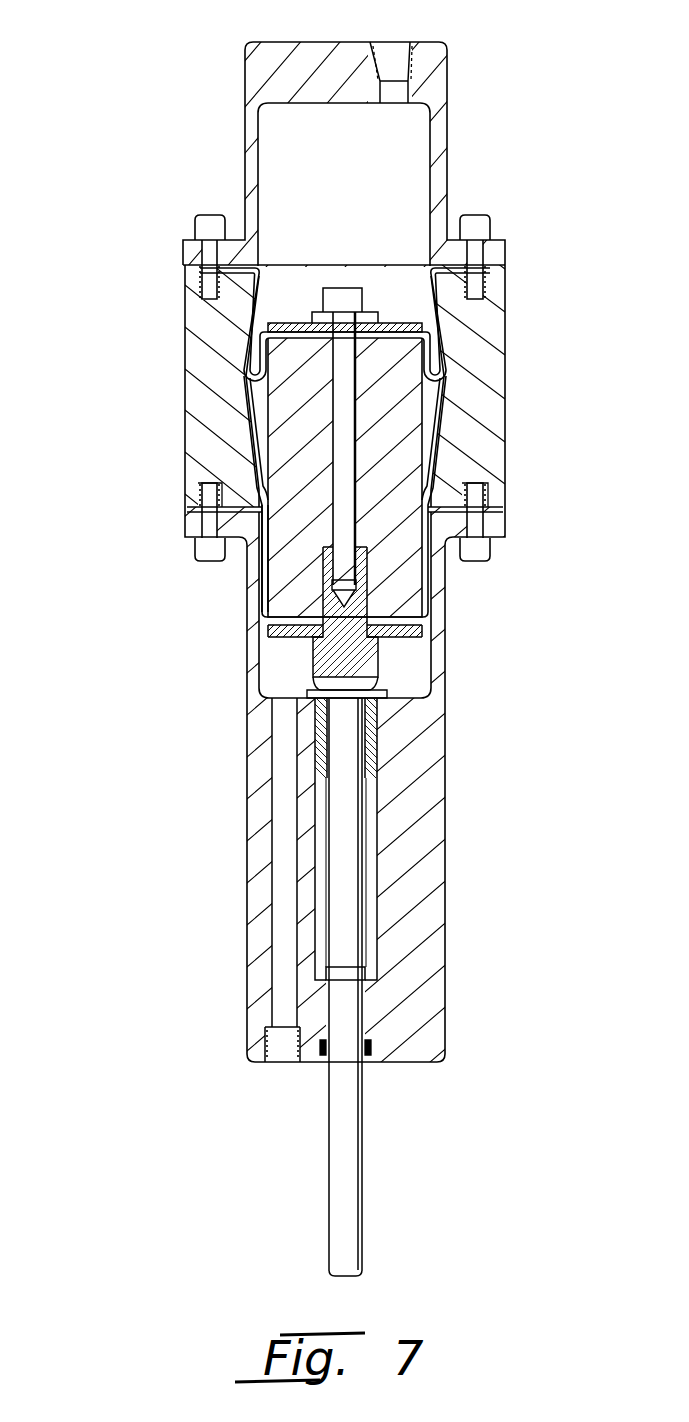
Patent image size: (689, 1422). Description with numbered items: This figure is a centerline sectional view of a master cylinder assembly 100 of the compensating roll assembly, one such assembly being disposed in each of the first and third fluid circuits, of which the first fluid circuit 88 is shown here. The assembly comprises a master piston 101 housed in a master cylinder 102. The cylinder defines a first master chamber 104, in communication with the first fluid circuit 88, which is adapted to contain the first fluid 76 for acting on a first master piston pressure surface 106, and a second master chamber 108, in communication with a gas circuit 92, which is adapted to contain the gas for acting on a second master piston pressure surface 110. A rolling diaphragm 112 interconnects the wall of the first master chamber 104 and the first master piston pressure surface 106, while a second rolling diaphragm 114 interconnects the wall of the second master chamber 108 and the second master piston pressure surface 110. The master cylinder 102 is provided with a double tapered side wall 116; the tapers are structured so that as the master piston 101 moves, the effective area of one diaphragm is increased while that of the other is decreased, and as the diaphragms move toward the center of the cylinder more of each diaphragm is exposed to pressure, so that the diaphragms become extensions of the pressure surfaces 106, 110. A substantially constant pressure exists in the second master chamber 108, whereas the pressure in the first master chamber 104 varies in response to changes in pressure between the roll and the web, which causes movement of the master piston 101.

The master cylinder assembly 100 is at (141, 563).
The first master chamber 104 is at (420, 137).
The first fluid 76 is at (413, 182).
The first fluid circuit 88 is at (404, 52).
The first master piston pressure surface 106 is at (243, 309).
The master piston 101 is at (384, 360).
The double tapered side wall 116 is at (436, 410).
The rolling diaphragm 114 is at (280, 561).
The rolling diaphragm 112 is at (447, 351).
The second master piston pressure surface 110 is at (402, 636).
The master cylinder 102 is at (445, 586).
The second master chamber 108 is at (417, 678).
The gas circuit 92 is at (290, 1057).